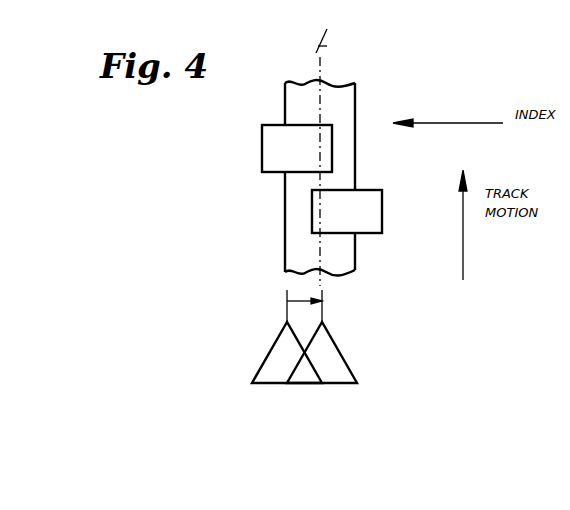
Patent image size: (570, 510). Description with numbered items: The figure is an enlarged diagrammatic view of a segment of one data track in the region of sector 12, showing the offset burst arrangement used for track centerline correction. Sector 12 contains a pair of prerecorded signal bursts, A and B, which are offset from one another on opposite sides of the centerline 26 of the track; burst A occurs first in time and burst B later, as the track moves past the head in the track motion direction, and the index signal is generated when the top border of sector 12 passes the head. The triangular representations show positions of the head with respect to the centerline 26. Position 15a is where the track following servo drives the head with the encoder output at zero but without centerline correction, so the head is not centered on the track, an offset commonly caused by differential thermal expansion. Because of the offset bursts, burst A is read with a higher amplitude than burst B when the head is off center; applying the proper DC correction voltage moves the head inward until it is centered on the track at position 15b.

The sector 12 is at (284, 232).
The centerline 26 is at (320, 68).
The head position 15a is at (272, 348).
The head position 15b is at (338, 348).